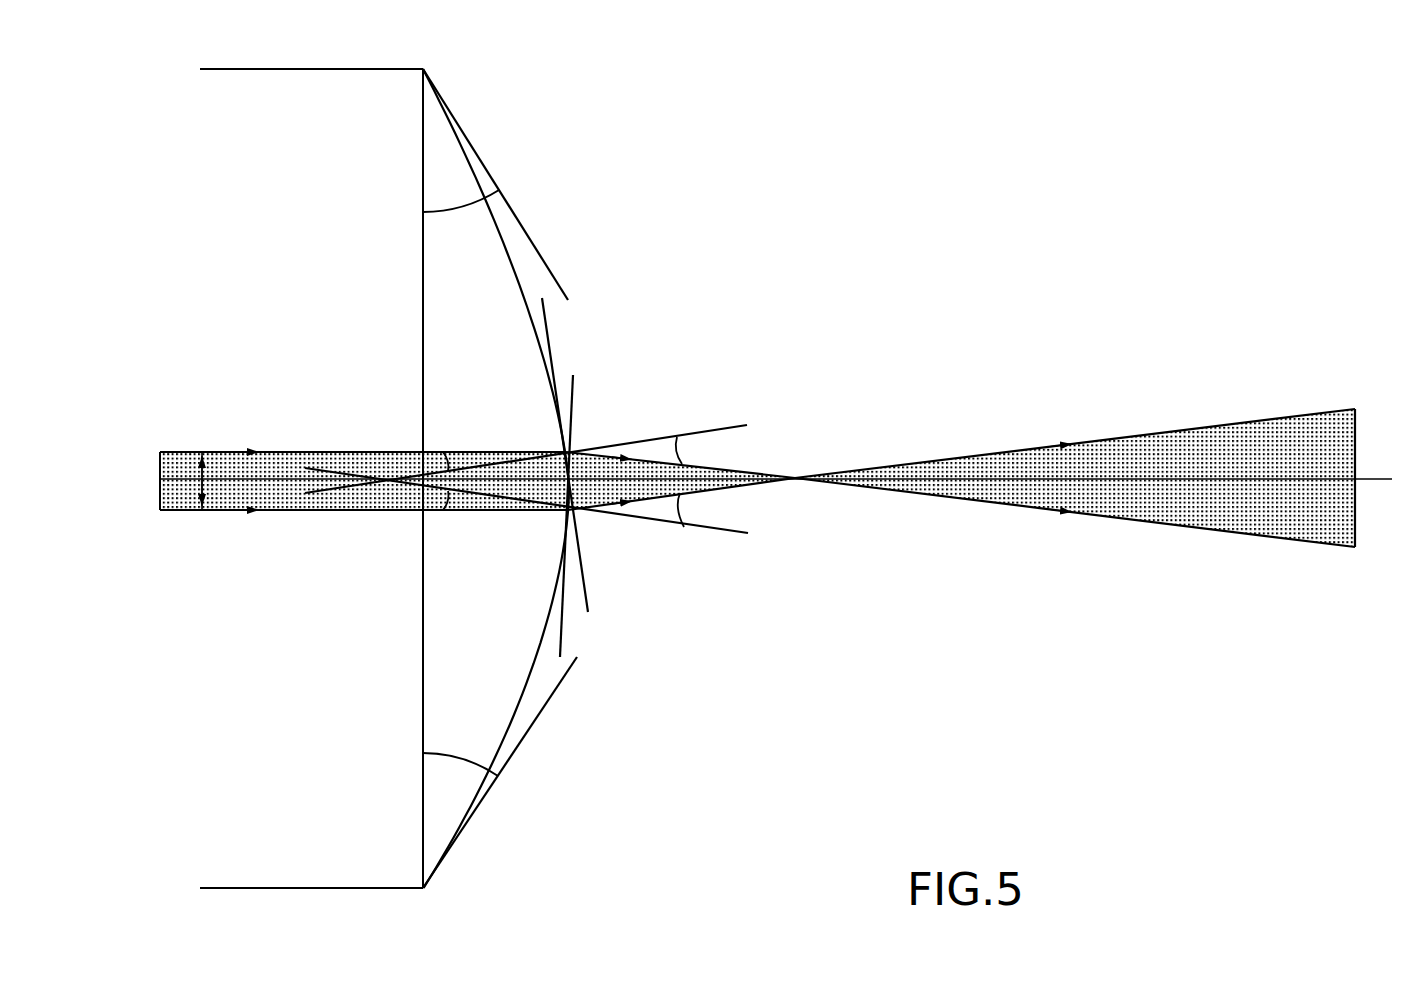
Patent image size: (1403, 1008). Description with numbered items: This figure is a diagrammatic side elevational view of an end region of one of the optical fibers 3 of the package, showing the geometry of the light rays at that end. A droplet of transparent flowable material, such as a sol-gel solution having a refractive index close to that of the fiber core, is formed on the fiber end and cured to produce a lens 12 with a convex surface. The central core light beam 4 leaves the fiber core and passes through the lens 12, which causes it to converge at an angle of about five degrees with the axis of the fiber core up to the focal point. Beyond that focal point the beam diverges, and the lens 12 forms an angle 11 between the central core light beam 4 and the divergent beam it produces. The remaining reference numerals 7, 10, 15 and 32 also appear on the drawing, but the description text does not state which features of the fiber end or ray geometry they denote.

The optical fiber 3 is at (328, 807).
The central core light beam 4 is at (193, 470).
The lens surface 7 is at (465, 715).
The lens holder 10 is at (437, 462).
The angle 11 is at (695, 453).
The lens 12 is at (467, 228).
The focused beam 15 is at (757, 403).
The diverging output beam 32 is at (1075, 366).